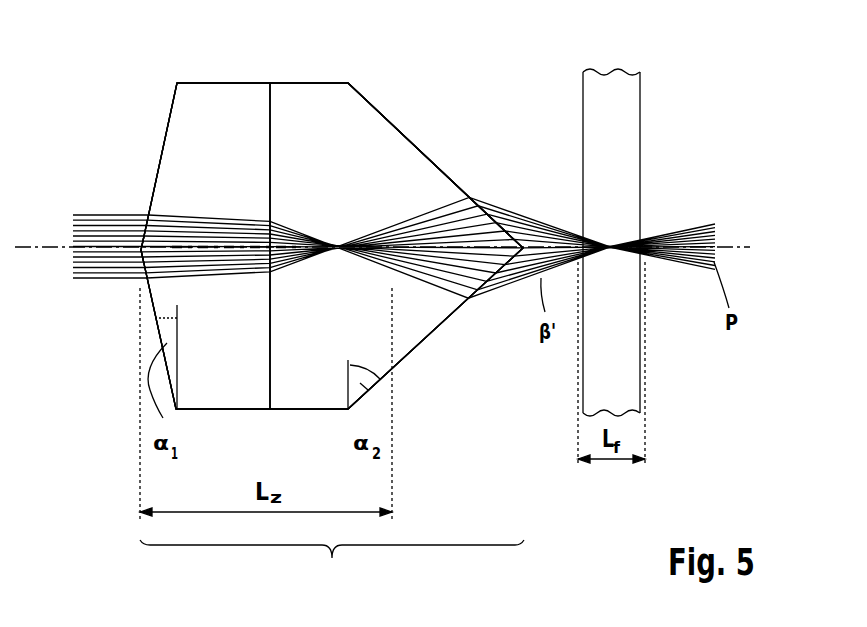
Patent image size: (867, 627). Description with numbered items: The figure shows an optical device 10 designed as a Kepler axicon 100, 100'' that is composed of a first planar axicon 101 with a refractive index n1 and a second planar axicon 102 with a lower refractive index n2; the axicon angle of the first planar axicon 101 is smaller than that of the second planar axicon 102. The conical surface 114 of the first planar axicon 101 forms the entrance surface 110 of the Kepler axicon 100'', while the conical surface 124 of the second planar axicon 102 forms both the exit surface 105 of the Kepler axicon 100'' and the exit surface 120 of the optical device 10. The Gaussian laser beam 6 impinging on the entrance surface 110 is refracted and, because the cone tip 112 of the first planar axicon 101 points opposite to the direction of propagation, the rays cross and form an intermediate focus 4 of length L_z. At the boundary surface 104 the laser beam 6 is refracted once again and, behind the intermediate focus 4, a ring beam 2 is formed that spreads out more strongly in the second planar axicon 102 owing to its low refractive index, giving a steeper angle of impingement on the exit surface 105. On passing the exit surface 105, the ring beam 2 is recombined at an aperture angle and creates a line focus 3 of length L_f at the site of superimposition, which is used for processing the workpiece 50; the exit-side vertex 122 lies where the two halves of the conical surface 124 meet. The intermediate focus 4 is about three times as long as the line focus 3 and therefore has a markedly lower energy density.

The ring beam 2 is at (377, 223).
The line focus 3 is at (617, 237).
The intermediate focus 4 is at (198, 244).
The laser beam 6 is at (104, 212).
The optical device 10 is at (333, 565).
The workpiece 50 is at (620, 112).
The Kepler axicon 100 is at (360, 215).
The Kepler axicon 100'' is at (332, 246).
The first planar axicon 101 is at (218, 410).
The second planar axicon 102 is at (313, 410).
The boundary surface 104 is at (268, 118).
The exit surface of the Kepler axicon 105 is at (388, 121).
The entrance surface 110 is at (167, 117).
The cone tip 112 is at (142, 257).
The conical surface of the first planar axicon 114 is at (155, 315).
The exit surface of the optical device 120 is at (435, 165).
The exit vertex 122 is at (526, 243).
The conical surface of the second planar axicon 124 is at (437, 330).